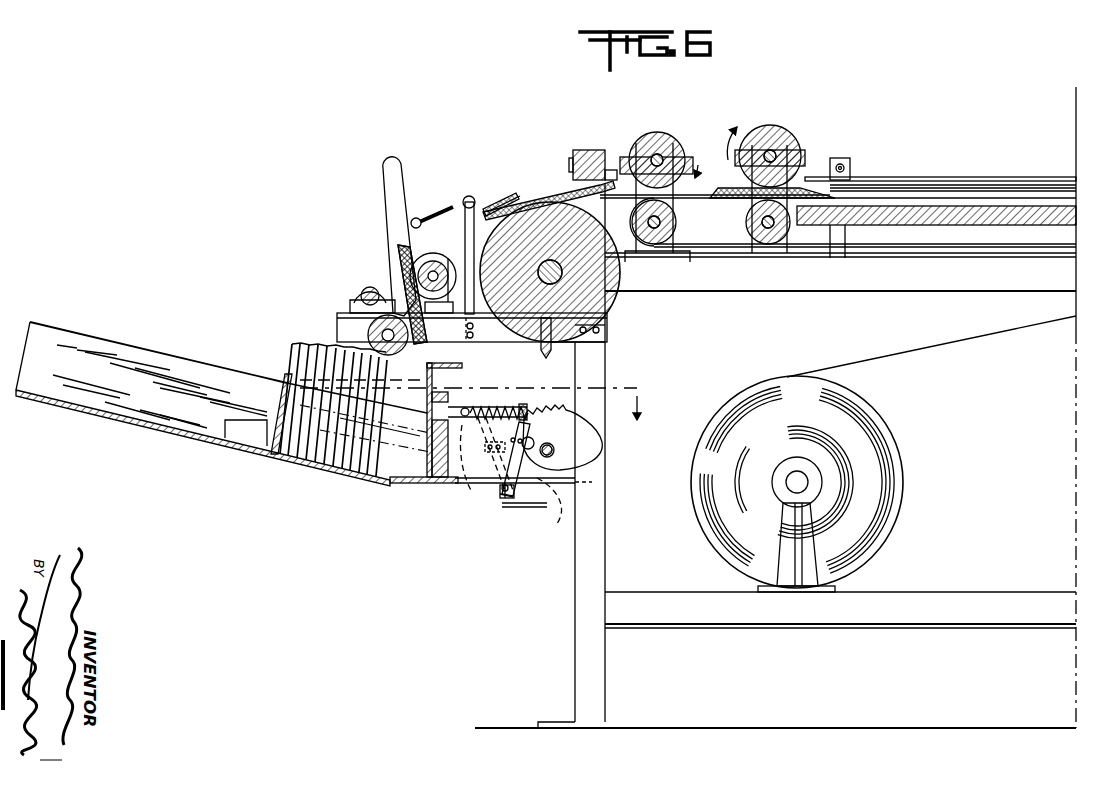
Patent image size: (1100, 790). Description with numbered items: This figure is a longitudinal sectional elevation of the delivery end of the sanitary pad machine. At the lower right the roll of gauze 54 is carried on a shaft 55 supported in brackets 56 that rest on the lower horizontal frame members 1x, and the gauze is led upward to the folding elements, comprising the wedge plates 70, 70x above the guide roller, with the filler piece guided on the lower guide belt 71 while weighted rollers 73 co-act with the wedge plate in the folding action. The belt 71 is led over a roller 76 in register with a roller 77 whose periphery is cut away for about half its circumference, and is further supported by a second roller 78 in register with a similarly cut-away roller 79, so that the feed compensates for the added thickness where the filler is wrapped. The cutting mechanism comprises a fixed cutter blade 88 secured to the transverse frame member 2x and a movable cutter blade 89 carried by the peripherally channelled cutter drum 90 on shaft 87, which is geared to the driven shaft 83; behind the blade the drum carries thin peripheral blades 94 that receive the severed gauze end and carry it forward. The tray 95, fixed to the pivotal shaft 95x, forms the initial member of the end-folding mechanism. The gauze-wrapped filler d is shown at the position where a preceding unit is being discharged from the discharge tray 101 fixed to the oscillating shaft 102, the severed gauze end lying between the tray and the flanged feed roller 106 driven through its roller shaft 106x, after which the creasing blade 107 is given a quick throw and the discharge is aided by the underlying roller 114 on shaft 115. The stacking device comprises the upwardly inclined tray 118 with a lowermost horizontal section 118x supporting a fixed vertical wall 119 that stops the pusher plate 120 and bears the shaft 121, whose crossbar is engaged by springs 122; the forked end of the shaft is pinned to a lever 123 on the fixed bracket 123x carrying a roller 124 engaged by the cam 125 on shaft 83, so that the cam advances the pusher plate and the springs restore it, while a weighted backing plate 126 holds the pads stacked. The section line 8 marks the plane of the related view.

The lower horizontal frame member 1x is at (775, 407).
The transverse frame member 2x is at (610, 168).
The section line / sheet stack 8 is at (471, 387).
The roll of gauze 54 is at (1024, 330).
The shaft 55 is at (795, 482).
The bracket 56 is at (808, 562).
The wedge plate 70 is at (966, 177).
The wedge plate 70x is at (1022, 185).
The lower guide belt 71 is at (918, 252).
The weighted roller 73 is at (850, 166).
The roller 76 is at (662, 250).
The roller 77 is at (668, 135).
The second roller 78 is at (770, 250).
The roller 79 is at (795, 133).
The shaft 83 is at (551, 452).
The shaft 87 is at (604, 310).
The fixed cutter blade 88 is at (580, 170).
The movable cutter blade 89 is at (543, 347).
The cutter drum 90 is at (615, 292).
The thin peripheral blade 94 is at (504, 330).
The tray 95 is at (505, 195).
The pivotal shaft 95x is at (492, 192).
The discharge tray 101 is at (400, 202).
The shaft 102 is at (360, 296).
The flanged feed roller 106 is at (404, 248).
The roller shaft 106x is at (436, 262).
The creasing blade 107 is at (436, 208).
The underlying roller 114 is at (340, 342).
The shaft 115 is at (408, 348).
The upwardly inclined tray 118 is at (197, 436).
The lowermost horizontal section 118x is at (416, 484).
The fixed vertical wall 119 is at (455, 484).
The pusher plate 120 is at (448, 370).
The shaft 121 is at (472, 404).
The spring 122 is at (524, 403).
The lever 123 is at (510, 478).
The fixed bracket 123x is at (506, 497).
The roller 124 is at (527, 508).
The cam 125 is at (600, 446).
The weighted backing plate 126 is at (285, 440).
The gauze-wrapped filler d is at (530, 190).